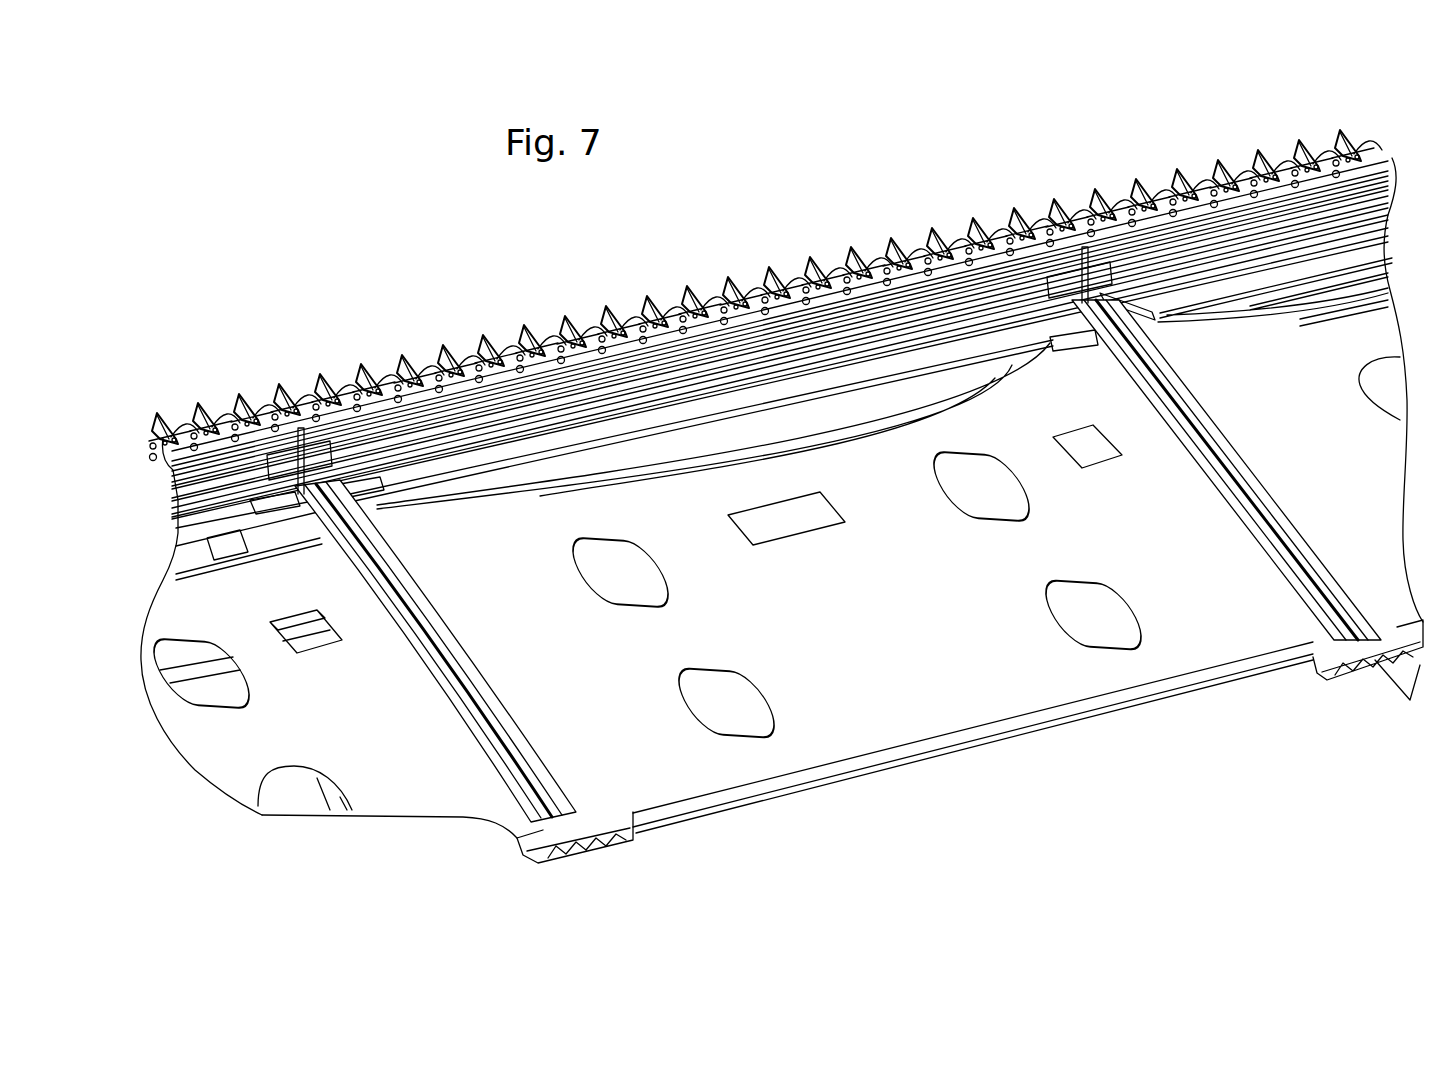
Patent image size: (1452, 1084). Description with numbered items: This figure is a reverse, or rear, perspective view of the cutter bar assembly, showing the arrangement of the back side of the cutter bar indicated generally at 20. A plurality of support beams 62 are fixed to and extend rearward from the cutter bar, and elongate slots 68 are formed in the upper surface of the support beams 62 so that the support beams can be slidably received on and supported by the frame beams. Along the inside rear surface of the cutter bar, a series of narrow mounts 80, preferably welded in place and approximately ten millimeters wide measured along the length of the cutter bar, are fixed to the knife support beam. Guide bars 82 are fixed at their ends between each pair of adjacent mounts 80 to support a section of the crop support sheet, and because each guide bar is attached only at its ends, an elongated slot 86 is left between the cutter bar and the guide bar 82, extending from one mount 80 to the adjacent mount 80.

The header / cutterbar assembly 20 is at (451, 247).
The support beam 62 is at (620, 843).
The elongate slot 68 is at (437, 650).
The mount 80 is at (323, 440).
The guide bar 82 is at (250, 465).
The elongated slot 86 is at (230, 410).